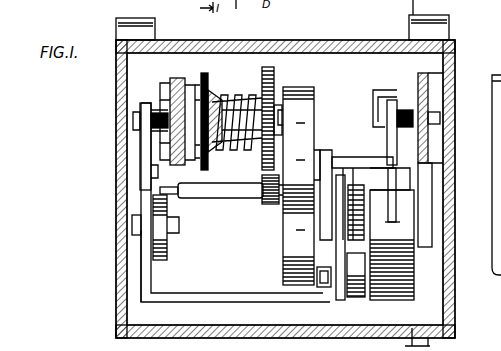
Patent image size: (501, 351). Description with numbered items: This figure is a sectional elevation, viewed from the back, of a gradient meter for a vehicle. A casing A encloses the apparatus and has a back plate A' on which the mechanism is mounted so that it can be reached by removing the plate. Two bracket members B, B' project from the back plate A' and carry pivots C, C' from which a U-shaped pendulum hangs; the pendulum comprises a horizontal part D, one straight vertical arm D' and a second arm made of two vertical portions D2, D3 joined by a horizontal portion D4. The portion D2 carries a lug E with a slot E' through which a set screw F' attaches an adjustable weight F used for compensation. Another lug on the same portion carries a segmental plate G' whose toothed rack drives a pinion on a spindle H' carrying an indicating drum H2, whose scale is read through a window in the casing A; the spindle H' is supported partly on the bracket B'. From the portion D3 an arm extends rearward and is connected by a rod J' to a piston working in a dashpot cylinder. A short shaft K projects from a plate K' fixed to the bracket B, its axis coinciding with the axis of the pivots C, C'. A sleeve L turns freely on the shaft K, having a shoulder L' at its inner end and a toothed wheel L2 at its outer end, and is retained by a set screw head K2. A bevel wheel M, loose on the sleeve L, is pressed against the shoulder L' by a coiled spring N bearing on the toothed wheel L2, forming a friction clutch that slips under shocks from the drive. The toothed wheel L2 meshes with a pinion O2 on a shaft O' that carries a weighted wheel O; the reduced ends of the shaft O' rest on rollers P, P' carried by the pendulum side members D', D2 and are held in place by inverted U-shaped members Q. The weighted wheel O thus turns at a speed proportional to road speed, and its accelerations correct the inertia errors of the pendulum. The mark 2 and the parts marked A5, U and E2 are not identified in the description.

The back plate A' is at (113, 20).
The casing A is at (446, 20).
The casing wall A5 is at (96, 350).
The bracket member B is at (132, 121).
The pivot C is at (110, 146).
The flange or shoulder L' is at (120, 132).
The sleeve L is at (136, 139).
The bevel wheel M is at (205, 72).
The plate K' is at (188, 87).
The slot E' is at (237, 84).
The lug E is at (242, 72).
The coiled spring N is at (264, 66).
The short shaft K is at (282, 76).
The vertical portion of pendulum arm D2 is at (314, 254).
The toothed wheel L2 is at (288, 88).
The set screw head K2 is at (282, 160).
The shaft O' is at (211, 206).
The toothed pinion O2 is at (268, 206).
The weighted wheel O is at (253, 220).
The disc or roller P is at (132, 227).
The inverted U-shaped member Q is at (153, 172).
The horizontal part of pendulum D is at (235, 202).
The straight pendulum arm D' is at (116, 266).
The vertical portion of pendulum arm D3 is at (393, 100).
The horizontal portion of pendulum arm D4 is at (345, 160).
The nut U is at (392, 150).
The disc or roller P' is at (337, 156).
The bracket member B' is at (453, 94).
The pivot C' is at (459, 103).
The segmental plate G' is at (422, 182).
The rod or link J' is at (426, 195).
The spindle H' is at (445, 205).
The indicating drum H2 is at (390, 256).
The set screw F' is at (318, 309).
The weight F is at (360, 268).
The bar E2 is at (340, 302).
The section line 2 is at (424, 349).